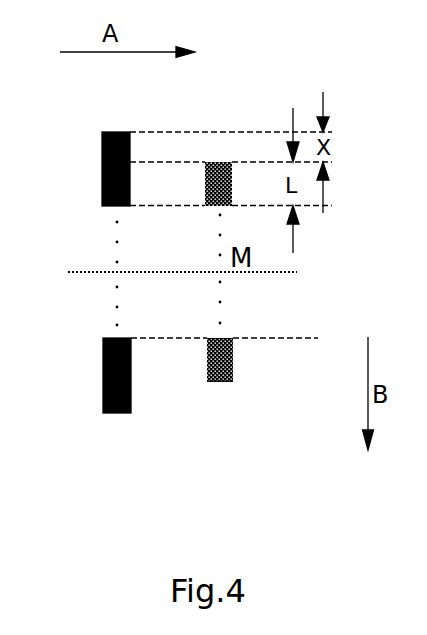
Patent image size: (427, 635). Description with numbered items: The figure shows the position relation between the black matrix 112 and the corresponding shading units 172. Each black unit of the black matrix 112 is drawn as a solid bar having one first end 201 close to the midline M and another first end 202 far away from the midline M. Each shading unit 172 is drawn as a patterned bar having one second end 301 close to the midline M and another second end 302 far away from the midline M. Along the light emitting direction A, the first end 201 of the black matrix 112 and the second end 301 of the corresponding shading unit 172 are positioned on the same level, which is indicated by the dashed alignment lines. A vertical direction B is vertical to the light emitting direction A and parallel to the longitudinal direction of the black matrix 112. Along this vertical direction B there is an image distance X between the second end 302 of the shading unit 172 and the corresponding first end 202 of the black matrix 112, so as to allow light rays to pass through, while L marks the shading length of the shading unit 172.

The black matrix 112 is at (102, 167).
The shading unit 172 is at (215, 162).
The first end 201 is at (114, 338).
The first end 202 is at (118, 413).
The second end 301 is at (222, 338).
The second end 302 is at (223, 382).